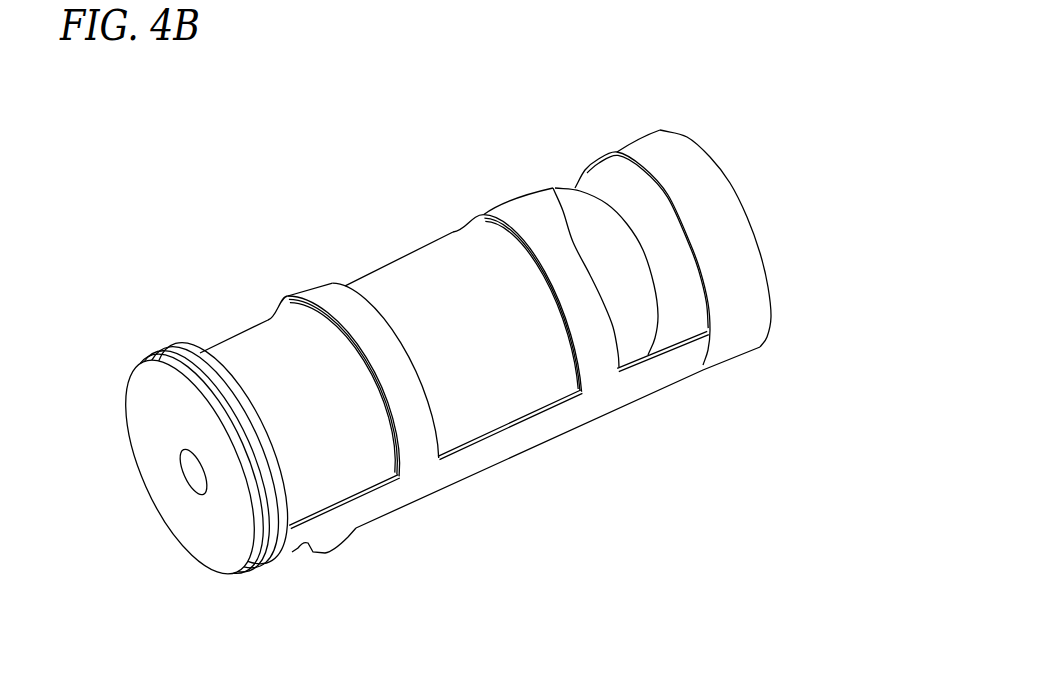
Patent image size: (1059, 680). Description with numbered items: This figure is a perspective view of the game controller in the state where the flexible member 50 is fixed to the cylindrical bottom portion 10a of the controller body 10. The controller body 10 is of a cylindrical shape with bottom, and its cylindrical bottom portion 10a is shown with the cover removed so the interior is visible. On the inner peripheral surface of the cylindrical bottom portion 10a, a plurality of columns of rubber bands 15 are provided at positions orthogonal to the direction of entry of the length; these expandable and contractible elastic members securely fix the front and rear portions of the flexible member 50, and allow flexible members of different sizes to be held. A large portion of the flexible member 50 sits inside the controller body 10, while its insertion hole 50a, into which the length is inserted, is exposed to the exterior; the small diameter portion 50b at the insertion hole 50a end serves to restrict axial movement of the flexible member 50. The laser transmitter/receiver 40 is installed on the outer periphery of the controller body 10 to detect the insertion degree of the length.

The controller body 10 is at (720, 103).
The cylindrical bottom portion 10a is at (608, 157).
The rubber bands 15 is at (315, 283).
The laser transmitter/receiver 40 is at (322, 555).
The flexible member 50 is at (161, 356).
The insertion hole 50a is at (181, 472).
The small diameter portion 50b is at (138, 393).